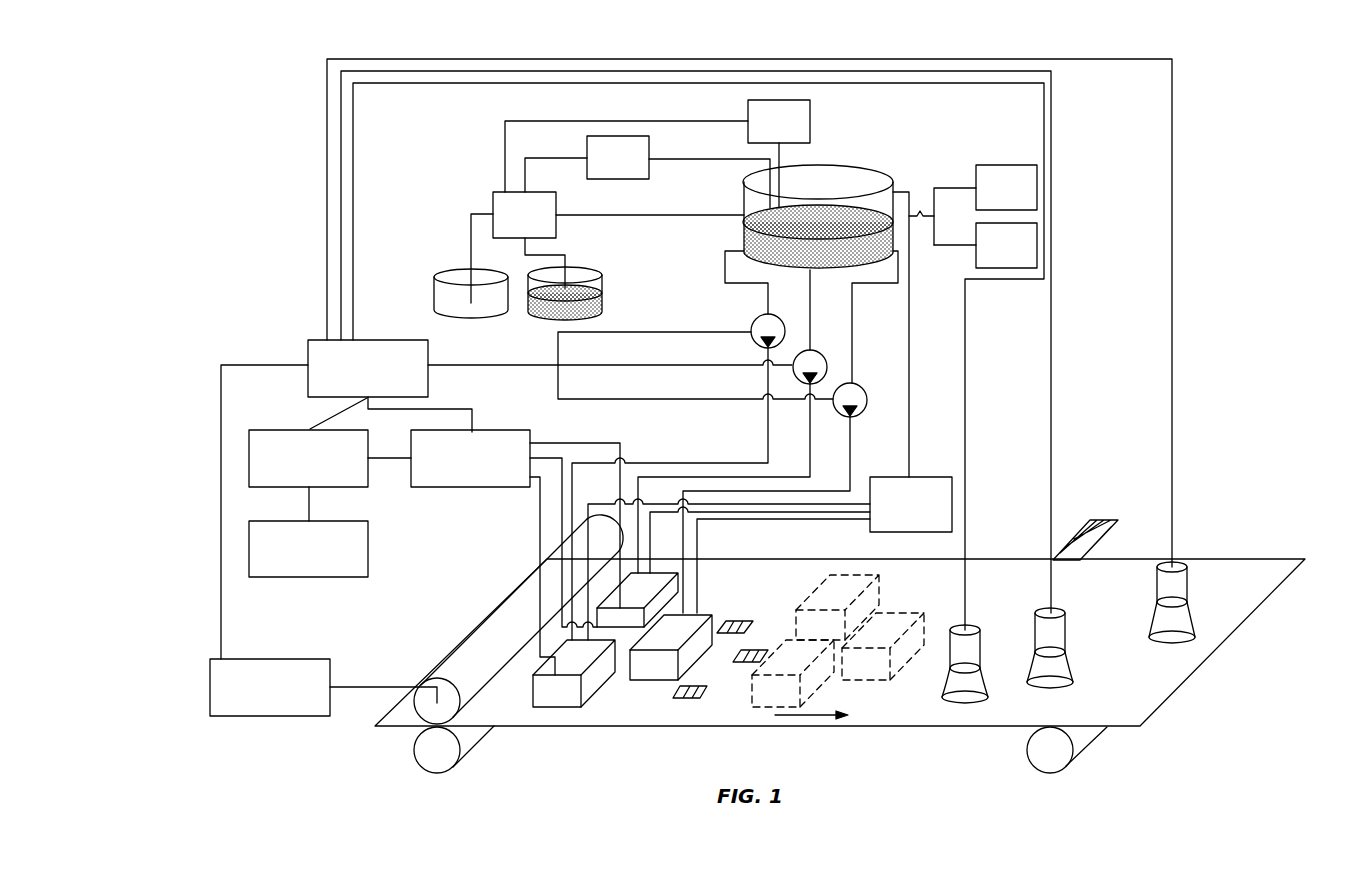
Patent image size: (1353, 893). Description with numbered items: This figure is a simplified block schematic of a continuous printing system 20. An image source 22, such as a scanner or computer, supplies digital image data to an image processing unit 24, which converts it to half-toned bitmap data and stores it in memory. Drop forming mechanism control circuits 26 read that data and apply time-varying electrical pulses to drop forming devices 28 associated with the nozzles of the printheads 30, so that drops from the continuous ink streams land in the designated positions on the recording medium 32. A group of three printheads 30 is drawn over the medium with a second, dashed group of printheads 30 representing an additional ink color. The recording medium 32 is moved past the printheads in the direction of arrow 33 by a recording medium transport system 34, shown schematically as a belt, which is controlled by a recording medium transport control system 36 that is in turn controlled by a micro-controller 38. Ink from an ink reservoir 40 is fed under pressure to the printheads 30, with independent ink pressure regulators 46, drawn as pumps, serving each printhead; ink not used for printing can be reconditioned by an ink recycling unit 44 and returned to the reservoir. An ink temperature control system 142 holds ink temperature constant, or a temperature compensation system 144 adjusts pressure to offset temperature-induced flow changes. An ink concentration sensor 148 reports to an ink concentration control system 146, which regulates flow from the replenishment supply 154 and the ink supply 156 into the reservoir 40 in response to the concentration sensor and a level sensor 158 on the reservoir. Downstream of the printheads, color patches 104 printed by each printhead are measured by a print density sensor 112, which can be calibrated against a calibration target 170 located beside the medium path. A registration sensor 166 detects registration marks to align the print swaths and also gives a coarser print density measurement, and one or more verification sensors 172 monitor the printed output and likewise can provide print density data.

The continuous printing system 20 is at (280, 130).
The image source 22 is at (295, 561).
The image processing unit 24 is at (295, 470).
The drop forming mechanism control circuits 26 is at (457, 470).
The drop forming device 28 is at (567, 702).
The printheads 30 is at (563, 664).
The recording medium 32 is at (898, 726).
The arrow 33 is at (820, 717).
The recording medium transport system 34 is at (418, 712).
The recording medium transport control system 36 is at (257, 699).
The micro-controller 38 is at (355, 380).
The ink reservoir 40 is at (805, 193).
The ink recycling unit 44 is at (898, 516).
The ink pressure regulators 46 is at (785, 320).
The color patches 104 is at (730, 633).
The print density sensor 112 is at (963, 698).
The ink temperature control system 142 is at (987, 200).
The temperature compensation system 144 is at (987, 258).
The ink concentration control system 146 is at (505, 227).
The ink concentration sensor 148 is at (599, 170).
The replenishment supply 154 is at (437, 278).
The ink supply 156 is at (597, 275).
The level sensor 158 is at (760, 133).
The registration sensor 166 is at (1065, 667).
The calibration target 170 is at (1102, 520).
The verification sensors 172 is at (1173, 565).